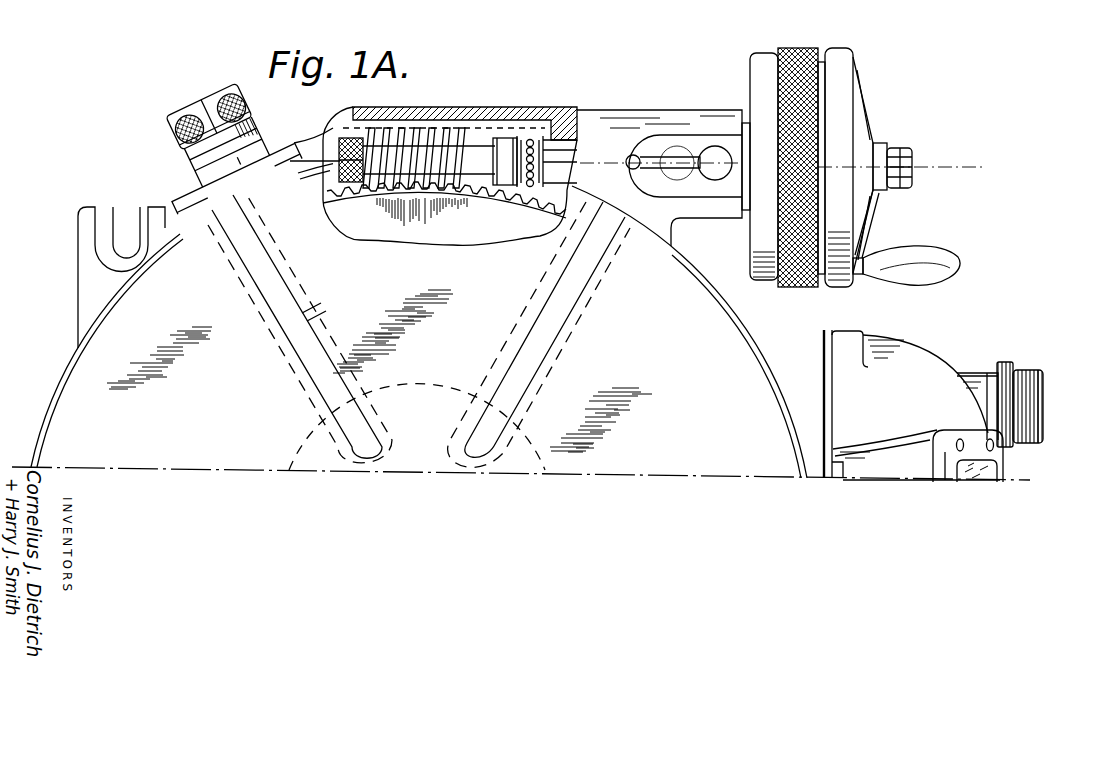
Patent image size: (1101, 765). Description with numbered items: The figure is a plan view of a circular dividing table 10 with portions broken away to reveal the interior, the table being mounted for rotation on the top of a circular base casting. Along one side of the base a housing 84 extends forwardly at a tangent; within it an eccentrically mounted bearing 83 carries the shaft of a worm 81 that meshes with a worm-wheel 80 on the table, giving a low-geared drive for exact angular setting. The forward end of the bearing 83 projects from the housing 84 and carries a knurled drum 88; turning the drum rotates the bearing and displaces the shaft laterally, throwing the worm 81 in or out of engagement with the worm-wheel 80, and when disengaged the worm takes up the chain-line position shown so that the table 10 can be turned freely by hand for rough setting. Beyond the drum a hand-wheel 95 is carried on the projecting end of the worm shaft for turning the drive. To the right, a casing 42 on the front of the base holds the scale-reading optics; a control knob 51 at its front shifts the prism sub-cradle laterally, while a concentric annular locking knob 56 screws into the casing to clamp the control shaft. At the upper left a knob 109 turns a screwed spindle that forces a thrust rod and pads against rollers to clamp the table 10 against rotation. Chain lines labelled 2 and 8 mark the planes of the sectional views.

The circular dividing table 10 is at (56, 394).
The knob 109 is at (238, 92).
The worm 81 is at (427, 131).
The bearing 83 is at (557, 157).
The housing 84 is at (615, 123).
The knurled drum 88 is at (783, 50).
The hand-wheel 95 is at (872, 122).
The worm-wheel 80 is at (520, 197).
The casing 42 is at (936, 364).
The annular locking knob 56 is at (1008, 365).
The control knob 51 is at (1030, 370).
The section line 2- 2 is at (217, 57).
The section line 8- 8 is at (330, 161).